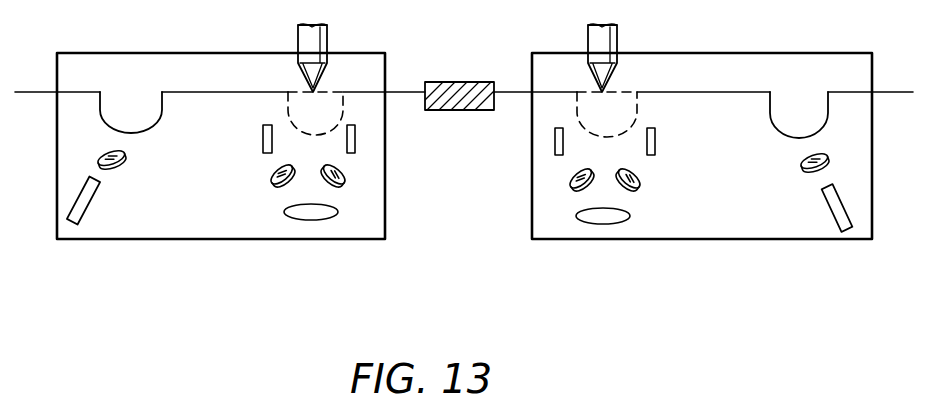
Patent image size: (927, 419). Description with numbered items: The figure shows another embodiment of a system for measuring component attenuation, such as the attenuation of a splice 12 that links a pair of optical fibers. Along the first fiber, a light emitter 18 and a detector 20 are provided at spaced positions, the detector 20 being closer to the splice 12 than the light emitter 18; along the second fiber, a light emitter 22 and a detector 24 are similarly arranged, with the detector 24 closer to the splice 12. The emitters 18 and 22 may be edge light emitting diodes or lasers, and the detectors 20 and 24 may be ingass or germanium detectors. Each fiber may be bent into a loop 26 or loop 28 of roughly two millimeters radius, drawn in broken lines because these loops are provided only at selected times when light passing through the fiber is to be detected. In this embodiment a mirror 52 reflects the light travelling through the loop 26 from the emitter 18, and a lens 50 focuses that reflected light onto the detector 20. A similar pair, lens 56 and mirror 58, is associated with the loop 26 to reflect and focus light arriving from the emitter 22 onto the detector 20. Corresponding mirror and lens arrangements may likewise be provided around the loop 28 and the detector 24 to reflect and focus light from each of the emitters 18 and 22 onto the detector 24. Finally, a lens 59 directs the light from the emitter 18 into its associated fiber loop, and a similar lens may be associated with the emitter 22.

The splice 12 is at (457, 80).
The light emitter 18 is at (90, 205).
The detector 20 is at (311, 220).
The light emitter 22 is at (826, 208).
The detector 24 is at (630, 216).
The loop 26 is at (288, 118).
The loop 28 is at (633, 103).
The lens 50 is at (345, 182).
The mirror 52 is at (356, 140).
The lens 56 is at (276, 186).
The mirror 58 is at (263, 140).
The lens 59 is at (125, 168).